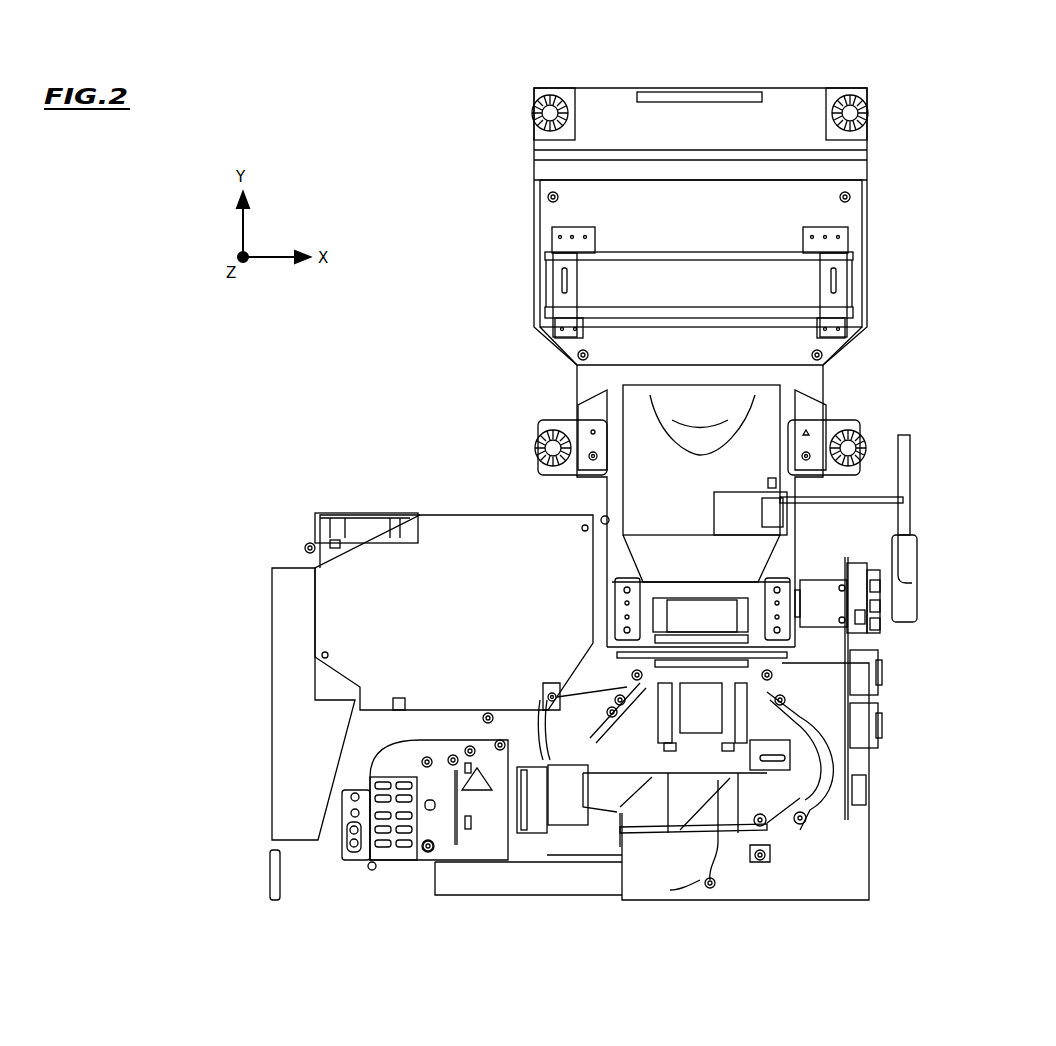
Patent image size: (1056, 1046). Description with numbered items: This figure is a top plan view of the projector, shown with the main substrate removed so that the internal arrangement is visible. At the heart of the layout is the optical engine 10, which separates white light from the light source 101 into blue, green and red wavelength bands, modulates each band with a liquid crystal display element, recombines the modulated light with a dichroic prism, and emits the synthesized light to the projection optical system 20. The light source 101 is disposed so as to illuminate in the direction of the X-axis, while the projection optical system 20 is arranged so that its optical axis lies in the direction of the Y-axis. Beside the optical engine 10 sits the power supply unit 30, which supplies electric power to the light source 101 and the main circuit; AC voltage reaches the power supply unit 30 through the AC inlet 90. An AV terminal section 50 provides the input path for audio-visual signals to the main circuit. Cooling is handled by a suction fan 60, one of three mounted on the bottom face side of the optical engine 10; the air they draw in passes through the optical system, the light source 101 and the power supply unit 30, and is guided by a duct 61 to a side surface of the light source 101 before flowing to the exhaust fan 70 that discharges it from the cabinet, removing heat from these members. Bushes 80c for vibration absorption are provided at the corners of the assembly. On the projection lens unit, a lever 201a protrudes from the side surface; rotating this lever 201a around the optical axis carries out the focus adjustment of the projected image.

The optical engine 10 is at (537, 780).
The projection optical system 20 is at (785, 332).
The power supply unit 30 is at (482, 530).
The AV terminal section 50 is at (892, 693).
The suction fan 60 is at (580, 720).
The duct 61 is at (507, 878).
The exhaust fan 70 is at (335, 508).
The bush for vibration absorption 80c is at (535, 120).
The AC inlet 90 is at (823, 590).
The light source 101 is at (428, 858).
The lever 201a is at (877, 500).